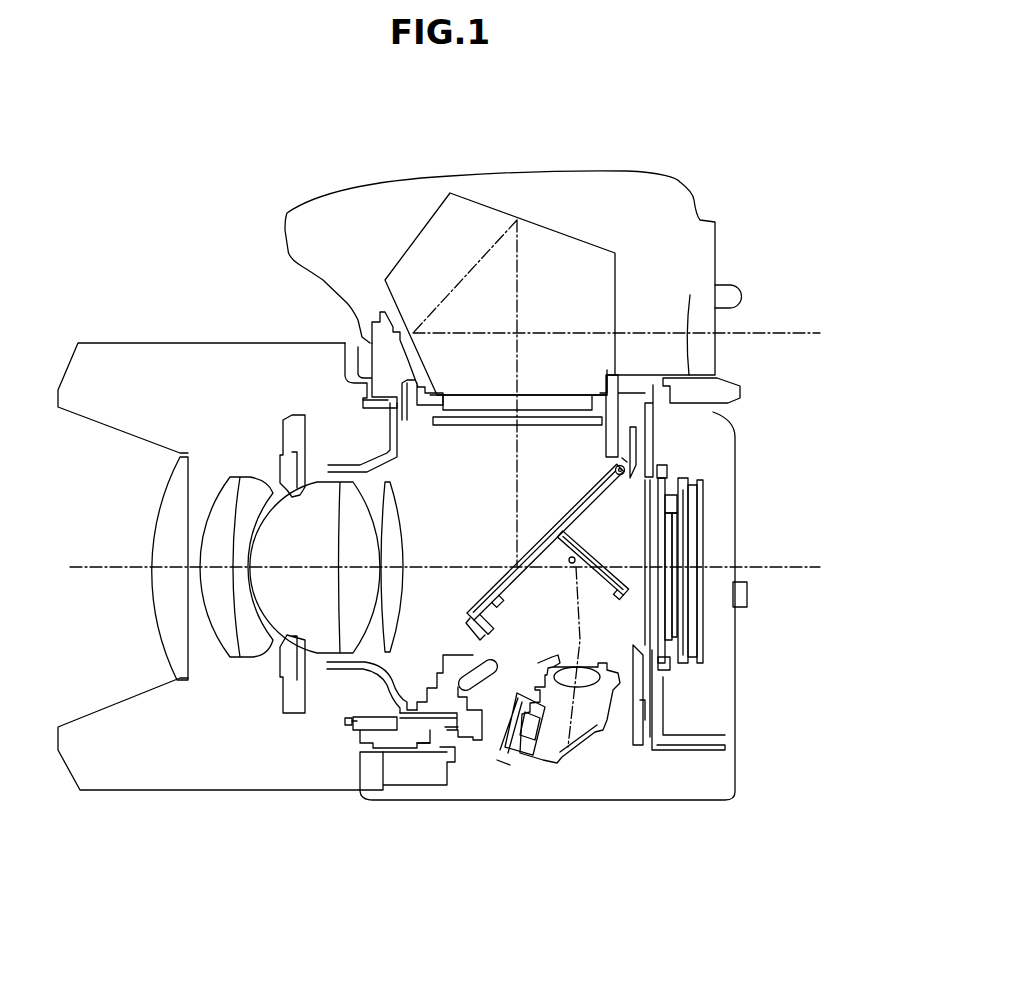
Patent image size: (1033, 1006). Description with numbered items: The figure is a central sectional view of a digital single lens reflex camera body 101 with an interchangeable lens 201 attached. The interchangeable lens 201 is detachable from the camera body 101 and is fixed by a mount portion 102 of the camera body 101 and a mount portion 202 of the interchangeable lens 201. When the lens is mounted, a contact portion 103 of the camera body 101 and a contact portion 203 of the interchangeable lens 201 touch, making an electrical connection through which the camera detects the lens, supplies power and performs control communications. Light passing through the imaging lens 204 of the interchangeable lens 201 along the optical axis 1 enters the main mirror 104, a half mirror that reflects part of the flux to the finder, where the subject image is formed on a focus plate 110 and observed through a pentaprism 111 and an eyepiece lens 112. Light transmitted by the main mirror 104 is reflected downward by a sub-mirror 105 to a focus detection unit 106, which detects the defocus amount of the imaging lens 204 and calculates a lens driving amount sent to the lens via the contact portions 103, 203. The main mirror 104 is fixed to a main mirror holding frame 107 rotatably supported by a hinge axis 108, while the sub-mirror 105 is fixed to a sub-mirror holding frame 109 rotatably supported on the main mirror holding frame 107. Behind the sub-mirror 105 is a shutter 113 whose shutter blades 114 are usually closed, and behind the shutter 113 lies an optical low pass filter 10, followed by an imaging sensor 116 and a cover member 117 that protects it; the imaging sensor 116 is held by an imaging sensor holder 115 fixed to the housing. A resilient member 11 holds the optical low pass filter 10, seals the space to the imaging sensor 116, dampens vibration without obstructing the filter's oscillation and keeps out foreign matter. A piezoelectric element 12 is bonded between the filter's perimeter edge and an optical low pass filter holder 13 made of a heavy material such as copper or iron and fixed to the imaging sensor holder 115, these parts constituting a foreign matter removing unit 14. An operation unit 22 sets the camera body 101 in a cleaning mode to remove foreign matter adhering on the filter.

The optical axis 1 is at (112, 572).
The camera body 101 is at (370, 200).
The mount portion 102 is at (370, 350).
The contact portion 103 is at (423, 720).
The main mirror 104 is at (483, 592).
The sub-mirror 105 is at (572, 560).
The focus detection unit 106 is at (557, 763).
The main mirror holding frame 107 is at (495, 610).
The hinge axis 108 is at (612, 473).
The sub-mirror holding frame 109 is at (612, 567).
The focus plate 110 is at (462, 427).
The pentaprism 111 is at (568, 233).
The eyepiece lens 112 is at (718, 316).
The shutter 113 is at (640, 742).
The shutter blades 114 is at (645, 617).
The imaging sensor holder 115 is at (700, 657).
The imaging sensor 116 is at (697, 627).
The cover member 117 is at (675, 562).
The optical low pass filter 10 is at (663, 523).
The resilient member 11 is at (673, 503).
The piezoelectric element 12 is at (667, 485).
The optical low pass filter holder 13 is at (662, 467).
The foreign matter removing unit 14 is at (780, 432).
The operation unit 22 is at (748, 598).
The interchangeable lens 201 is at (172, 362).
The mount portion 202 is at (342, 365).
The contact portion 203 is at (347, 728).
The imaging lens 204 is at (380, 547).